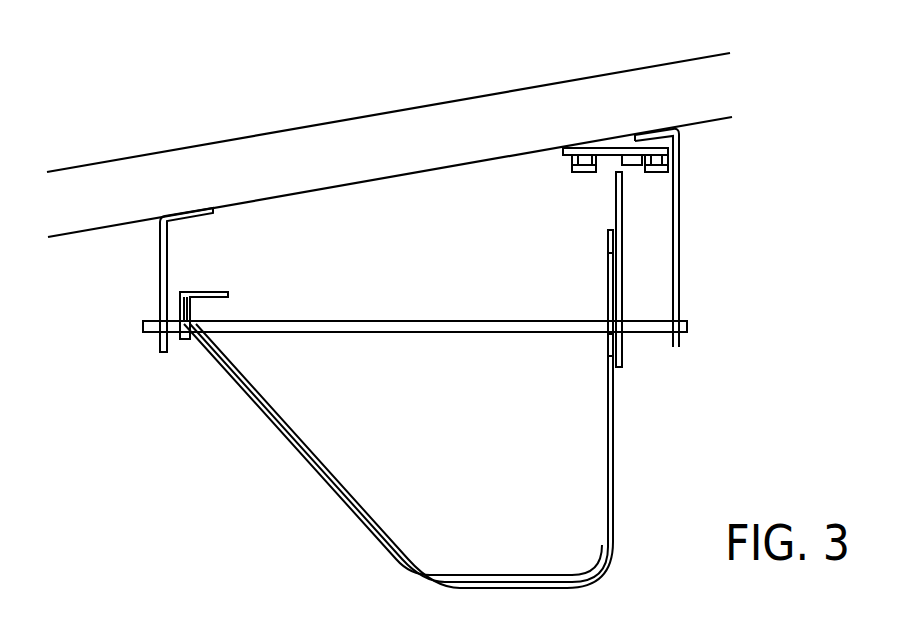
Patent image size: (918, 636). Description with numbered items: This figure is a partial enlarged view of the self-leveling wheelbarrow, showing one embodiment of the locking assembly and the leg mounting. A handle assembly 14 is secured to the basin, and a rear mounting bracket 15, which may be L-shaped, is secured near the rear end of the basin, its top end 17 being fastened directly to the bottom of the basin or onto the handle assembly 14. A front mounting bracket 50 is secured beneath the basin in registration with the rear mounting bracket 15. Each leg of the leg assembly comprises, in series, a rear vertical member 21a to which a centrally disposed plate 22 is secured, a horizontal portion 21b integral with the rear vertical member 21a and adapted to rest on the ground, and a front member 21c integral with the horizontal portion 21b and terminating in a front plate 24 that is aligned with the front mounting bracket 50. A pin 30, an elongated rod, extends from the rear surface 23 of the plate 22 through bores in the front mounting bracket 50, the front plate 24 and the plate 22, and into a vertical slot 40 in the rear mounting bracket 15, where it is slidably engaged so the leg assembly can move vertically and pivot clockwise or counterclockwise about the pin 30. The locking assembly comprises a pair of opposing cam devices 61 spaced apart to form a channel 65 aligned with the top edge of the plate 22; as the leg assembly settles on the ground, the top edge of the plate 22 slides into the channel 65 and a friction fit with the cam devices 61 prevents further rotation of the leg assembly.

The handle assembly 14 is at (680, 78).
The rear mounting bracket 15 is at (680, 198).
The top end 17 is at (655, 129).
The rear vertical member 21a is at (614, 460).
The horizontal portion 21b is at (537, 590).
The front member 21c is at (257, 412).
The plate 22 is at (624, 200).
The rear surface 23 is at (623, 297).
The front plate 24 is at (180, 297).
The pin 30 is at (388, 321).
The vertical slot 40 is at (624, 334).
The front mounting bracket 50 is at (160, 243).
The cam devices 61 is at (566, 160).
The channel 65 is at (616, 164).